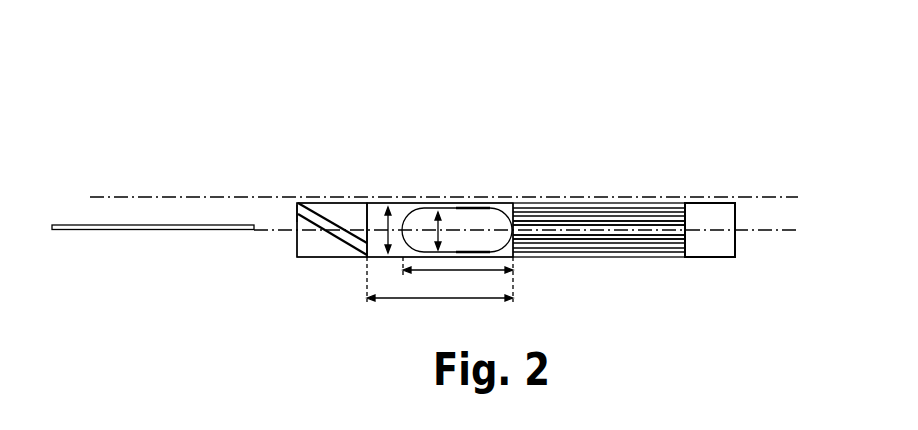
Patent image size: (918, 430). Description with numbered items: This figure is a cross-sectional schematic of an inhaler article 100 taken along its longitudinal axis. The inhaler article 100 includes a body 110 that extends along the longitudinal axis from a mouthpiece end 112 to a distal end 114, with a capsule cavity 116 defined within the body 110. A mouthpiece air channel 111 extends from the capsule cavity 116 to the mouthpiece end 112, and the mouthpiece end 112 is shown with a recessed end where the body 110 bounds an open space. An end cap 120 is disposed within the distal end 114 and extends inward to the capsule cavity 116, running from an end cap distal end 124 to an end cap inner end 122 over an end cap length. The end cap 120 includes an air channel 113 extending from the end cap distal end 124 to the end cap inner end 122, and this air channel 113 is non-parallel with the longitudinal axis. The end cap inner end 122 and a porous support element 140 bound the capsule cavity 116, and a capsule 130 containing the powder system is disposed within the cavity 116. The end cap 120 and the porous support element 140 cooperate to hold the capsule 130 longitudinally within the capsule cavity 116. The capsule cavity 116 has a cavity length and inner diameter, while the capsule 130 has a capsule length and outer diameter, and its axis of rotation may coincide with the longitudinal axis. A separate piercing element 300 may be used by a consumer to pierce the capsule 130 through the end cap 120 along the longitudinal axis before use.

The inhaler article 100 is at (598, 118).
The body 110 is at (412, 210).
The mouthpiece air channel 111 is at (655, 241).
The mouthpiece end 112 is at (735, 197).
The air channel 113 is at (341, 236).
The distal end 114 is at (289, 194).
The capsule cavity 116 is at (397, 250).
The end cap 120 is at (348, 212).
The end cap inner end 122 is at (366, 258).
The end cap distal end 124 is at (296, 212).
The capsule 130 is at (460, 210).
The porous support element 140 is at (556, 216).
The piercing element 300 is at (113, 225).